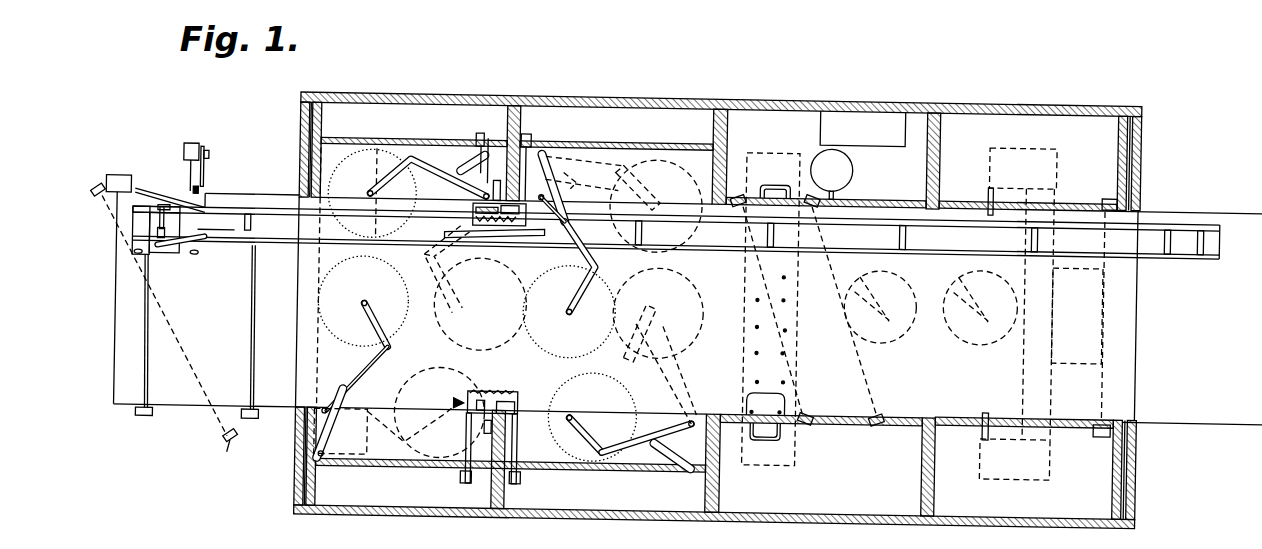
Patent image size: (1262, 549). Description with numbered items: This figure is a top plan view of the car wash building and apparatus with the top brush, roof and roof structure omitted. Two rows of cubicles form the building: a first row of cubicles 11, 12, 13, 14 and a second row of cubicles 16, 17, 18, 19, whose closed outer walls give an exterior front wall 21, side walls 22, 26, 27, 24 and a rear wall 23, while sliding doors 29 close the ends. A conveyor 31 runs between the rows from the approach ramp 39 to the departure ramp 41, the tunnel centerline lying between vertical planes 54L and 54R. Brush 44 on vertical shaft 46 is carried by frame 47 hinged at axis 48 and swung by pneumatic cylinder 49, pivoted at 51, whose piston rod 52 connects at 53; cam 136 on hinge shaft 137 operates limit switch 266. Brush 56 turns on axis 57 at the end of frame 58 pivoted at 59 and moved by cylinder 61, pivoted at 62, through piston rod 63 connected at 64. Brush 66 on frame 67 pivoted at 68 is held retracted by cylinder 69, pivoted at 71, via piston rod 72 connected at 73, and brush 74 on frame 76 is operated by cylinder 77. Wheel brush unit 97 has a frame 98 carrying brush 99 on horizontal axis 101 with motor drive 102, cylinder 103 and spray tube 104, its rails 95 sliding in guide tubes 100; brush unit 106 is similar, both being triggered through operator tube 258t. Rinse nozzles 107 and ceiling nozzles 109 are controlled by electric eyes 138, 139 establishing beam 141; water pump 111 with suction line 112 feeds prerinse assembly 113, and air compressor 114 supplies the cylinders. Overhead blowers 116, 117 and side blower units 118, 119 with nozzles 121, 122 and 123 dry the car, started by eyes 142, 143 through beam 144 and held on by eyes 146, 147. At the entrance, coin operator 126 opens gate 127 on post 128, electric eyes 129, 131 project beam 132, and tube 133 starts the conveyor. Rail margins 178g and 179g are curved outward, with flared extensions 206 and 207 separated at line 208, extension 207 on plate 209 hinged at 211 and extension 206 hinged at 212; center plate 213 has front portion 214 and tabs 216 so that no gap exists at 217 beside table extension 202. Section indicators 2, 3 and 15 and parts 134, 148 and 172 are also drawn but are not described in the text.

The section line 2- 2 is at (143, 305).
The section line 3- 3 is at (905, 92).
The cubicle 11 is at (452, 92).
The cubicle 12 is at (635, 92).
The cubicle 13 is at (800, 92).
The cubicle 14 is at (975, 92).
The section line 15- 15 is at (165, 198).
The cubicle 16 is at (410, 514).
The cubicle 17 is at (580, 514).
The cubicle 18 is at (820, 514).
The cubicle 19 is at (980, 514).
The exterior front building wall 21 is at (301, 143).
The exterior side building wall 22 is at (370, 92).
The rear building wall 23 is at (1142, 146).
The exterior side building wall 24 is at (1058, 92).
The exterior side building wall 26 is at (570, 92).
The exterior side building wall 27 is at (855, 92).
The sliding doors 29 is at (301, 106).
The conveyor 31 is at (719, 252).
The approach ramp 39 is at (196, 410).
The departure ramp 41 is at (1200, 408).
The first brush 44 is at (345, 300).
The vertical shaft 46 is at (368, 300).
The frame 47 is at (392, 345).
The vertical hinge shaft axis 48 is at (329, 407).
The pneumatic cylinder 49 is at (348, 458).
The pivot mount 51 is at (325, 460).
The piston rod 52 is at (352, 400).
The pivot connection 53 is at (372, 370).
The vertical plane 54L is at (1062, 197).
The vertical plane 54R is at (1060, 406).
The brush 56 is at (512, 305).
The vertical axis 57 is at (569, 312).
The frame 58 is at (579, 268).
The pivot 59 is at (543, 190).
The pneumatic cylinder 61 is at (565, 158).
The pivot mount 62 is at (545, 150).
The piston rod 63 is at (575, 184).
The pivot connection 64 is at (572, 224).
The brush 66 is at (372, 194).
The frame 67 is at (440, 185).
The pivot 68 is at (470, 186).
The pneumatic cylinder 69 is at (489, 140).
The pivot mount 71 is at (498, 177).
The piston rod 72 is at (477, 133).
The pivot connection 73 is at (465, 165).
The brush 74 is at (567, 380).
The frame 76 is at (595, 410).
The pneumatic cylinder 77 is at (672, 450).
The rails 95 is at (524, 428).
The wheel brush unit 97 is at (502, 378).
The frame 98 is at (468, 400).
The brush 99 is at (480, 388).
The guide tubes 100 is at (470, 480).
The horizontal axis 101 is at (470, 383).
The motor drive 102 is at (520, 401).
The pneumatic cylinder 103 is at (493, 430).
The tube with spray nozzles 104 is at (498, 395).
The brush unit 106 is at (482, 222).
The fresh water rinse nozzles 107 is at (765, 414).
The fresh water rinse nozzles 109 is at (790, 322).
The water pump 111 is at (831, 170).
The suction line 112 is at (846, 182).
The prerinse assembly 113 is at (333, 137).
The air compressor 114 is at (883, 136).
The overhead blower fan 116 is at (892, 275).
The overhead blower fan 117 is at (955, 325).
The blower unit 118 is at (1030, 150).
The blower unit 119 is at (1008, 455).
The horizontally discharging nozzle 121 is at (988, 200).
The horizontally discharging nozzle 122 is at (991, 401).
The downwardly discharging nozzle 123 is at (1110, 286).
The coin operator 126 is at (119, 178).
The gate 127 is at (206, 150).
The post 128 is at (190, 145).
The electric eye 129 is at (96, 188).
The electric eye 131 is at (235, 452).
The beam 132 is at (183, 330).
The pressure switch operator tube 133 is at (152, 385).
The leg 134 is at (257, 360).
The cam 136 is at (360, 417).
The hinge shaft 137 is at (322, 403).
The electric eye 138 is at (738, 185).
The electric eye 139 is at (814, 414).
The beam 141 is at (785, 313).
The electric eye 142 is at (810, 185).
The electric eye 143 is at (882, 414).
The beam 144 is at (870, 370).
The electric eye 146 is at (1108, 185).
The electric eye 147 is at (1107, 423).
The hidden wall 148 is at (1110, 336).
The plate 172 is at (225, 218).
The upper marginal portion of conveyor rail 178g is at (266, 195).
The upper marginal edge of conveyor rail 179g is at (292, 243).
The conveyor table extension 202 is at (223, 243).
The rail extension 206 is at (163, 193).
The rail extension 207 is at (200, 262).
The line 208 is at (236, 195).
The flat plate 209 is at (140, 248).
The hinge 211 is at (140, 258).
The hinge 212 is at (212, 195).
The center plate 213 is at (135, 229).
The front end portion 214 is at (135, 212).
The tabs 216 is at (169, 226).
The gap location 217 is at (158, 245).
The pneumatic operator tube 258t is at (510, 235).
The limit switch 266 is at (301, 440).